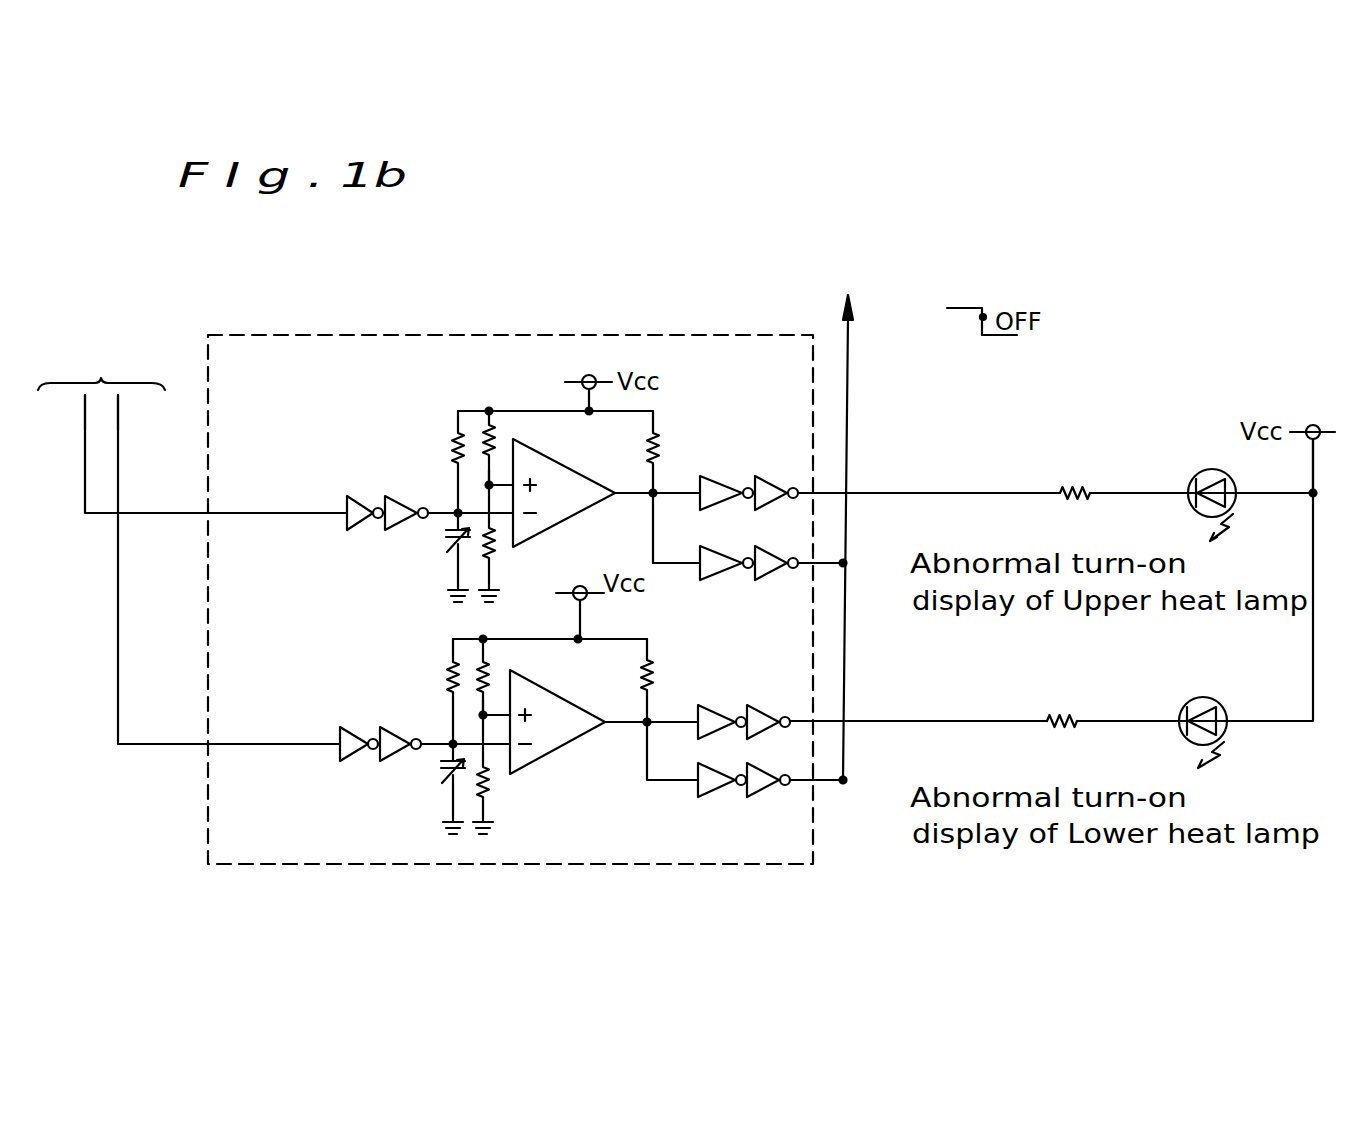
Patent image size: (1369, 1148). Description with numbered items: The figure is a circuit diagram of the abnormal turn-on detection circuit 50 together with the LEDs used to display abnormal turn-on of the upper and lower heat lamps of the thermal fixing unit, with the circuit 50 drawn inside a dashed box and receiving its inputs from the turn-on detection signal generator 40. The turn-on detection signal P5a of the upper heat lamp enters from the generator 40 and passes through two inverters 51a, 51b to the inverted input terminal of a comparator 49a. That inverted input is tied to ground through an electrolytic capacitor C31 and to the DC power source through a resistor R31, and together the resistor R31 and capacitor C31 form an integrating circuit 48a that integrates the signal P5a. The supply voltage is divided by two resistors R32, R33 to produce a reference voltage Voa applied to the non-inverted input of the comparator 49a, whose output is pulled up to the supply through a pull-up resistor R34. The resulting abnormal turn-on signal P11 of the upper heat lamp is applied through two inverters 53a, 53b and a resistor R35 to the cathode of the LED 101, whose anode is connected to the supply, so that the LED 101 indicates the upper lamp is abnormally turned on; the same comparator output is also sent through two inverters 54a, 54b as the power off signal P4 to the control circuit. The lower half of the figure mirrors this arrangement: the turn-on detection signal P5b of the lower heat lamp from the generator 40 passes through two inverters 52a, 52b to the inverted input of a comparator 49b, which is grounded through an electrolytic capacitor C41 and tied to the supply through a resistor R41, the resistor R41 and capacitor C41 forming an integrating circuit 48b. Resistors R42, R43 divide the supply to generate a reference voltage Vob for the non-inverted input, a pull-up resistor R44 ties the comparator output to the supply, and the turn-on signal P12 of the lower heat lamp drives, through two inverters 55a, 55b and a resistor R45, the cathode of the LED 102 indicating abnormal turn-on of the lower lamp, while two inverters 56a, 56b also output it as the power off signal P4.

The turn-on detection signal generator 40 is at (114, 385).
The abnormal turn-on detection circuit 50 is at (242, 335).
The turn-on detection signal P5a is at (182, 511).
The turn-on detection signal P5b is at (170, 743).
The inverter 51a is at (355, 500).
The inverter 51b is at (410, 500).
The inverter 52a is at (345, 727).
The inverter 52b is at (400, 727).
The integrating circuit 48a is at (420, 530).
The integrating circuit 48b is at (415, 763).
The resistor R31 is at (452, 445).
The resistor R32 is at (500, 428).
The resistor R33 is at (513, 537).
The pull-up resistor R34 is at (662, 450).
The resistor R35 is at (1080, 476).
The resistor R41 is at (446, 680).
The resistor R42 is at (476, 668).
The resistor R43 is at (492, 778).
The pull-up resistor R44 is at (656, 677).
The resistor R45 is at (1063, 704).
The electrolytic capacitor C31 is at (448, 548).
The electrolytic capacitor C41 is at (443, 785).
The reference voltage Voa is at (480, 472).
The reference voltage Vob is at (490, 710).
The comparator 49a is at (585, 450).
The comparator 49b is at (560, 692).
The inverter 53a is at (725, 478).
The inverter 53b is at (772, 478).
The inverter 54a is at (720, 580).
The inverter 54b is at (768, 580).
The inverter 55a is at (712, 707).
The inverter 55b is at (765, 706).
The inverter 56a is at (722, 797).
The inverter 56b is at (764, 797).
The power off signal P4 is at (845, 521).
The abnormal turn-on signal P11 is at (1015, 491).
The turn-on signal P12 is at (1005, 720).
The LED LED101 is at (1200, 470).
The LED LED102 is at (1195, 699).